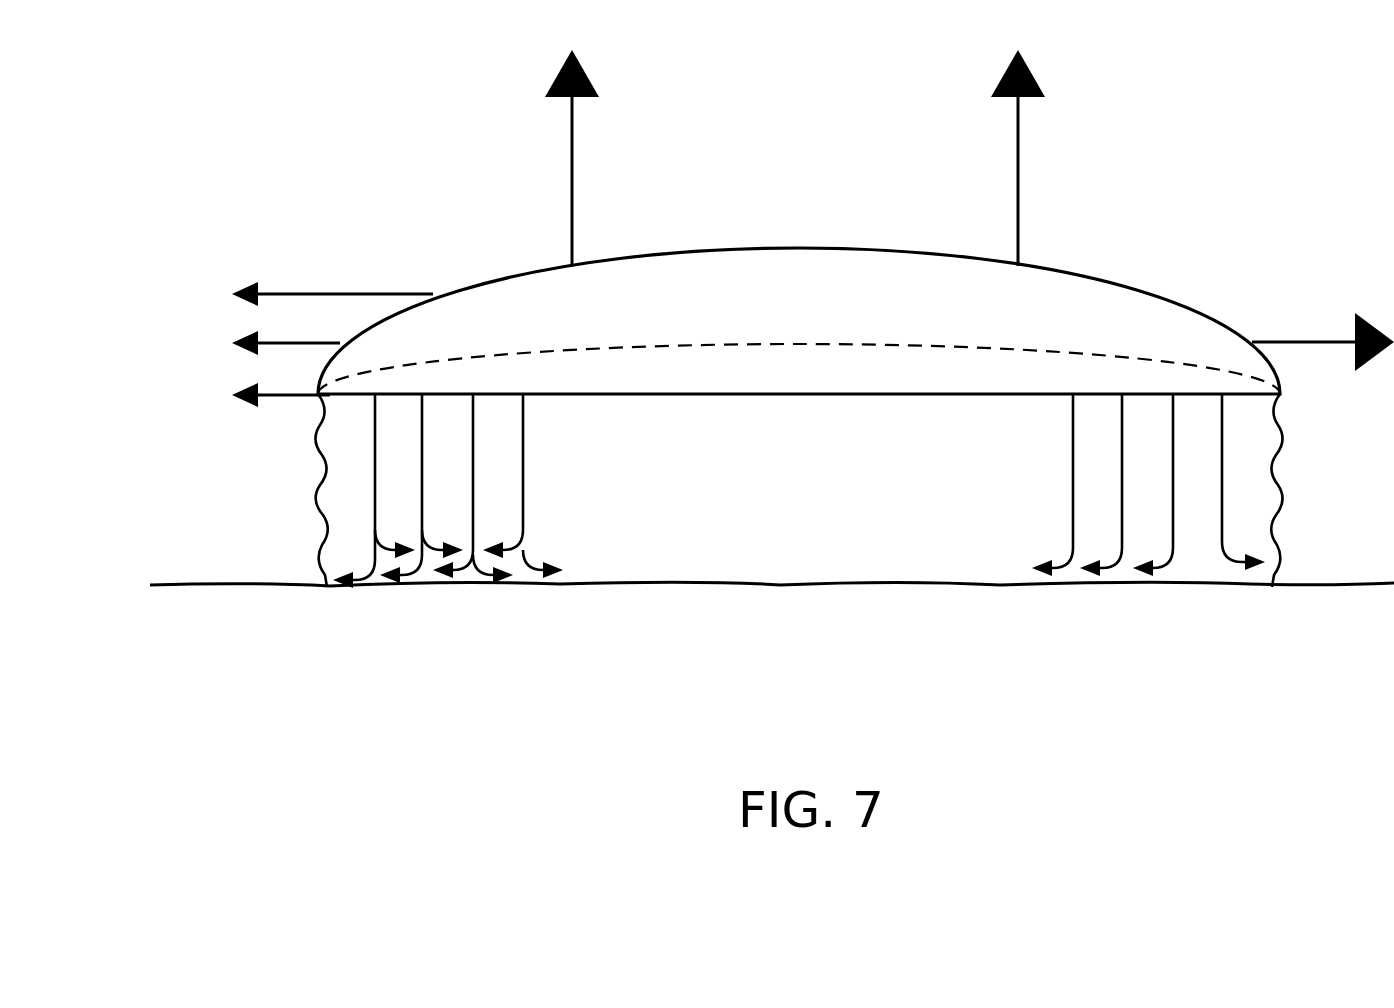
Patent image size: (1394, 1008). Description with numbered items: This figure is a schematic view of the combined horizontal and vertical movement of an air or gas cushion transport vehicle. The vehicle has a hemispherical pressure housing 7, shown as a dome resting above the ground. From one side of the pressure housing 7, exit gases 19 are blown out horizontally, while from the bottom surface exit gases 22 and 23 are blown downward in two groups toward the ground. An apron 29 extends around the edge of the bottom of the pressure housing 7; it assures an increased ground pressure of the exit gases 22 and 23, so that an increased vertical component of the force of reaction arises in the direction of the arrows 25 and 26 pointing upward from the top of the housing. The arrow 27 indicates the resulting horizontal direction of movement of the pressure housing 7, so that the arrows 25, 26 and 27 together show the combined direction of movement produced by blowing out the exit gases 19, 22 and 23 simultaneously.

The pressure housing 7 is at (750, 372).
The exit gases 19 is at (225, 278).
The exit gases 22 is at (563, 605).
The exit gases 23 is at (1265, 605).
The arrow indicating direction of movement 25 is at (572, 189).
The arrow indicating direction of movement 26 is at (1018, 189).
The arrow indicating direction of movement 27 is at (1297, 342).
The apron 29 is at (316, 468).